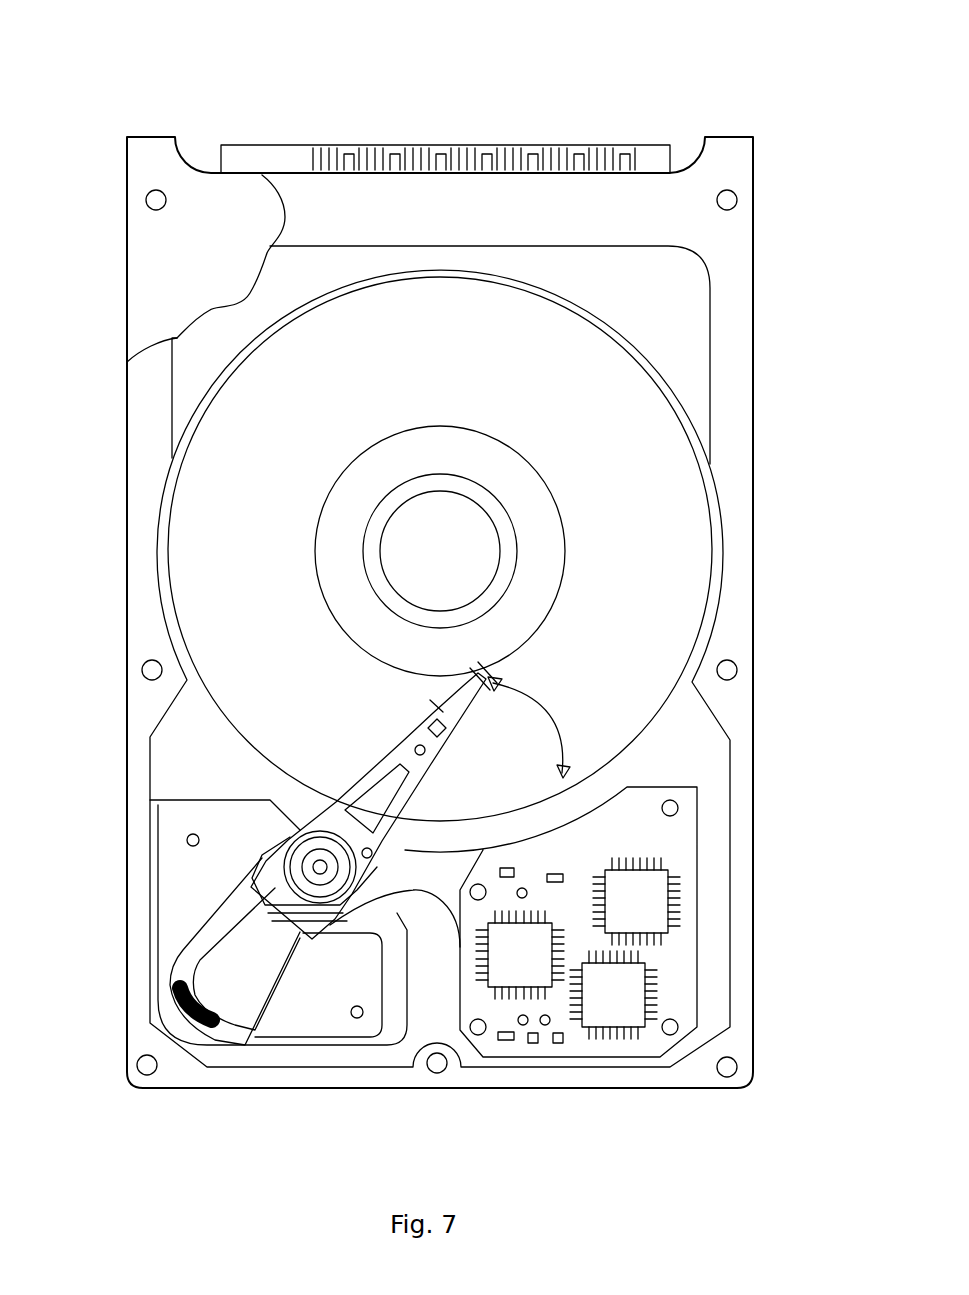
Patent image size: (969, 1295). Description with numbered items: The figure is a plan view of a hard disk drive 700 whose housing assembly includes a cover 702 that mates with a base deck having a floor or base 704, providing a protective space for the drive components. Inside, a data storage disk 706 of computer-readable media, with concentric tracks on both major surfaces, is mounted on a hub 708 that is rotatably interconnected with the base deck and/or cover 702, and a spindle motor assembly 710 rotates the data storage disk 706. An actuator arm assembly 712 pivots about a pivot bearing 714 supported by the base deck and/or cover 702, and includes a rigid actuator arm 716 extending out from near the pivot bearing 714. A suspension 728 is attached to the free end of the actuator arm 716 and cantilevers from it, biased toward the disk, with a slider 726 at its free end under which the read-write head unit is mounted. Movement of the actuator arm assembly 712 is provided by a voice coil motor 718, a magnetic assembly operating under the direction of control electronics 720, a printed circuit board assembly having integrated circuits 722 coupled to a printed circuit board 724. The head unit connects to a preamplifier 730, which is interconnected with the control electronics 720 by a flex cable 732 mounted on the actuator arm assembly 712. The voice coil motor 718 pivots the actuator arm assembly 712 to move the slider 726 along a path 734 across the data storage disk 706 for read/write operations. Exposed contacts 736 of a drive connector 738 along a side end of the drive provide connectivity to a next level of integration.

The hard disk drive 700 is at (160, 45).
The cover 702 is at (150, 622).
The base 704 is at (196, 259).
The data storage disk 706 is at (290, 433).
The hub 708 is at (325, 503).
The spindle motor assembly 710 is at (412, 567).
The actuator arm assembly 712 is at (408, 840).
The pivot bearing 714 is at (297, 868).
The actuator arm 716 is at (330, 823).
The voice coil motor 718 is at (138, 962).
The control electronics 720 is at (698, 1097).
The integrated circuit 722 is at (640, 898).
The printed circuit board 724 is at (670, 962).
The slider 726 is at (492, 672).
The suspension 728 is at (443, 712).
The preamplifier 730 is at (350, 892).
The flex cable 732 is at (370, 897).
The path 734 is at (549, 714).
The exposed contacts 736 is at (637, 150).
The drive connector 738 is at (228, 155).